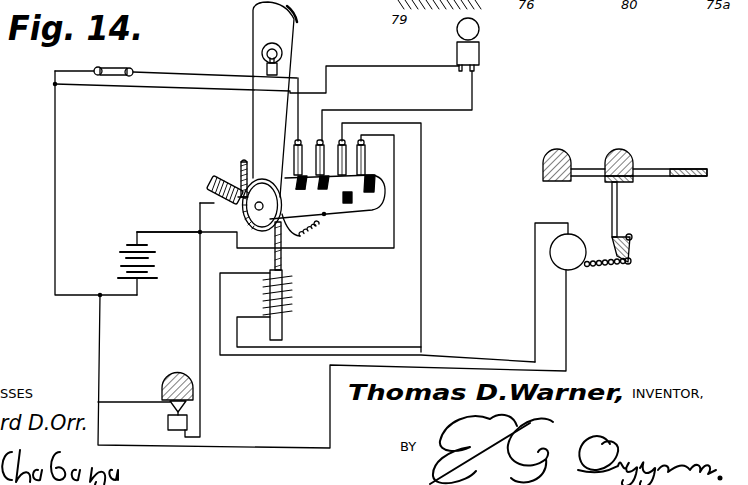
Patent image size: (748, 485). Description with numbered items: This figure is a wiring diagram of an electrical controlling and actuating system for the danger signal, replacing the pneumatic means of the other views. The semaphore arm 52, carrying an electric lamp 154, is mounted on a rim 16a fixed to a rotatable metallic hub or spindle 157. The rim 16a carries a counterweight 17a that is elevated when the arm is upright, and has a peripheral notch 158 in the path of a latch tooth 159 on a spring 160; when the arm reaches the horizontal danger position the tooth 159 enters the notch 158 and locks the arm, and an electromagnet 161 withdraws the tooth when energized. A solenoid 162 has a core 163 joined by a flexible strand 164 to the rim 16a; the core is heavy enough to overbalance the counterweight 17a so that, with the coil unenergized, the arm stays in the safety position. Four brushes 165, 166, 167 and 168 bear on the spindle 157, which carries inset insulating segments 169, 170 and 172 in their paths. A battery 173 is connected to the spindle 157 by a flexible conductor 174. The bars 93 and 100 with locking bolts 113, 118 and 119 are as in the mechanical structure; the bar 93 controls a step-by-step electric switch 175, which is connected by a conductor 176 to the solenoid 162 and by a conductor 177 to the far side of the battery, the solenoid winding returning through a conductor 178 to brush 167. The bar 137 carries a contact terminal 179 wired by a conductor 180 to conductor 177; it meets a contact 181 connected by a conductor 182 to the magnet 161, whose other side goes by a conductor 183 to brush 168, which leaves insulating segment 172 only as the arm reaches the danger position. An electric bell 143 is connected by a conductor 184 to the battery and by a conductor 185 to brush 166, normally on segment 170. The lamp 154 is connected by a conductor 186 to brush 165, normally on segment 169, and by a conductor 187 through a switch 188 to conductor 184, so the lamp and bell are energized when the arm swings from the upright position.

The semaphore arm 52 is at (257, 22).
The electric lamp 154 is at (262, 52).
The switch 188 is at (113, 67).
The conductor 187 is at (206, 72).
The conductor 186 is at (299, 76).
The conductor 184 is at (56, 188).
The electric bell 143 is at (480, 51).
The conductor 185 is at (473, 98).
The conductor 178 is at (422, 296).
The conductor 183 is at (380, 250).
The conductor 174 is at (163, 232).
The battery 173 is at (121, 259).
The conductor 182 is at (200, 329).
The brush 165 is at (292, 167).
The brush 166 is at (314, 170).
The brush 167 is at (337, 173).
The brush 168 is at (358, 174).
The hub or spindle 157 is at (377, 203).
The insulating segment 172 is at (369, 186).
The insulating segment 170 is at (335, 196).
The insulating segment 169 is at (301, 198).
The conductor 177 is at (323, 214).
The spring 160 is at (242, 160).
The latch tooth 159 is at (240, 186).
The electromagnet 161 is at (211, 186).
The peripheral notch 158 is at (264, 179).
The counterweight 17a is at (257, 210).
The rim 16a is at (302, 237).
The flexible strand 164 is at (282, 263).
The solenoid 162 is at (290, 292).
The core 163 is at (283, 325).
The conductor 176 is at (221, 286).
The conductor 180 is at (135, 398).
The bar 137 is at (172, 377).
The contact terminal 179 is at (186, 405).
The contact 181 is at (168, 422).
The electric switch 175 is at (575, 266).
The locking bolt 118 is at (604, 178).
The bar 100 is at (553, 153).
The locking bolt 113 is at (586, 168).
The bar 93 is at (620, 152).
The locking bolt 119 is at (658, 169).